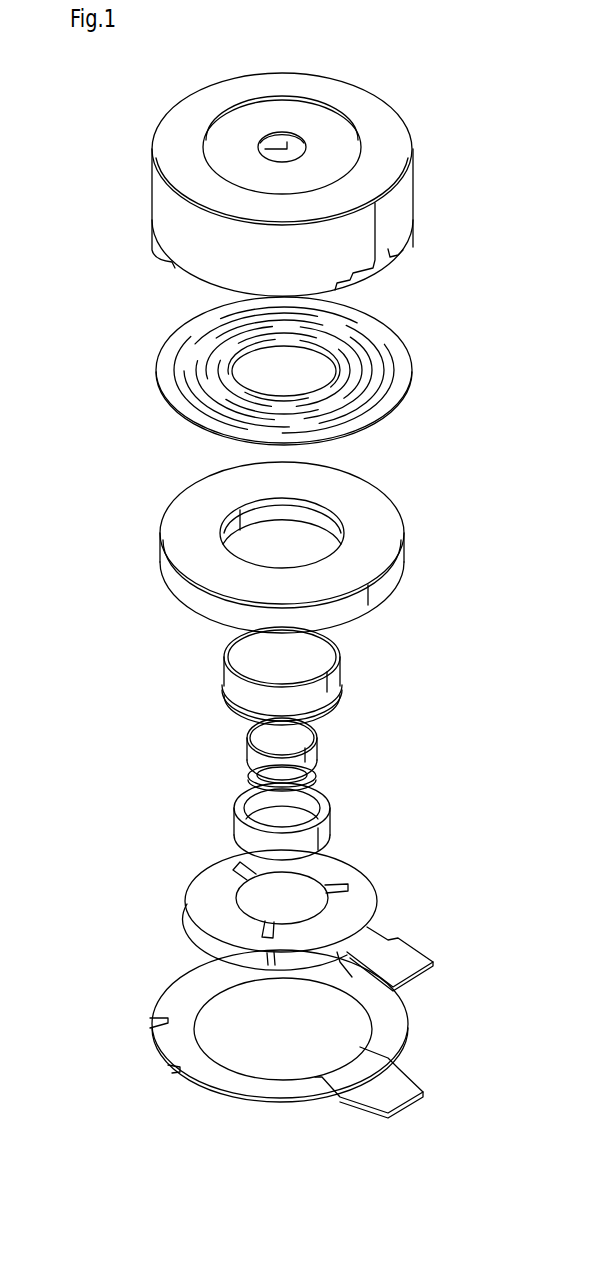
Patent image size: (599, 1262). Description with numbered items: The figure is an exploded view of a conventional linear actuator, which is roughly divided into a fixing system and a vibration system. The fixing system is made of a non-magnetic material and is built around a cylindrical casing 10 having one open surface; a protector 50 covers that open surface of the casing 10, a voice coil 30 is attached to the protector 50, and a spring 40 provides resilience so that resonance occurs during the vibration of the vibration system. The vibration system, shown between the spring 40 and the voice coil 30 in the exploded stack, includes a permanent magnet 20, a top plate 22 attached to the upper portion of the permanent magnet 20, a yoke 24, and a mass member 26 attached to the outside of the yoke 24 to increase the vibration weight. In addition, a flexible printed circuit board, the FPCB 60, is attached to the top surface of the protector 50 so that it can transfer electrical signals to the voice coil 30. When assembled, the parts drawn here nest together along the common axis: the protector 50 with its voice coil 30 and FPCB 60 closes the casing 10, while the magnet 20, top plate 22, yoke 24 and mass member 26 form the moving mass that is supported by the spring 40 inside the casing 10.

The cylindrical casing 10 is at (407, 209).
The spring 40 is at (393, 343).
The mass member 26 is at (381, 512).
The yoke 24 is at (333, 683).
The permanent magnet 20 is at (318, 748).
The top plate 22 is at (318, 776).
The voice coil 30 is at (232, 822).
The FPCB 60 is at (401, 953).
The protector 50 is at (387, 1019).